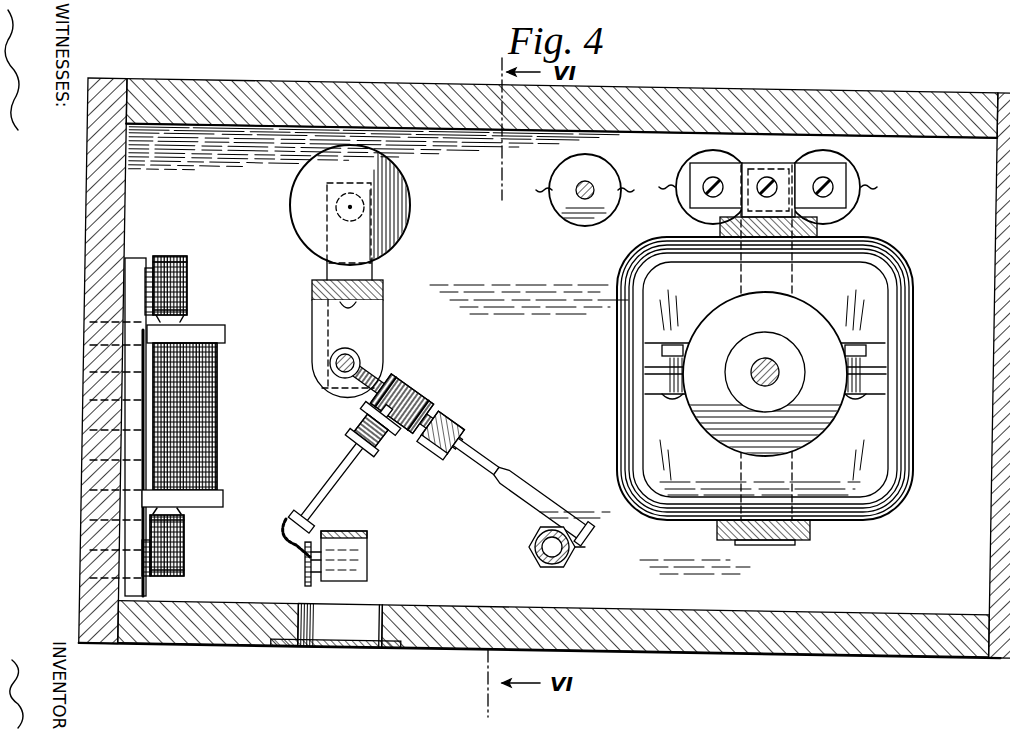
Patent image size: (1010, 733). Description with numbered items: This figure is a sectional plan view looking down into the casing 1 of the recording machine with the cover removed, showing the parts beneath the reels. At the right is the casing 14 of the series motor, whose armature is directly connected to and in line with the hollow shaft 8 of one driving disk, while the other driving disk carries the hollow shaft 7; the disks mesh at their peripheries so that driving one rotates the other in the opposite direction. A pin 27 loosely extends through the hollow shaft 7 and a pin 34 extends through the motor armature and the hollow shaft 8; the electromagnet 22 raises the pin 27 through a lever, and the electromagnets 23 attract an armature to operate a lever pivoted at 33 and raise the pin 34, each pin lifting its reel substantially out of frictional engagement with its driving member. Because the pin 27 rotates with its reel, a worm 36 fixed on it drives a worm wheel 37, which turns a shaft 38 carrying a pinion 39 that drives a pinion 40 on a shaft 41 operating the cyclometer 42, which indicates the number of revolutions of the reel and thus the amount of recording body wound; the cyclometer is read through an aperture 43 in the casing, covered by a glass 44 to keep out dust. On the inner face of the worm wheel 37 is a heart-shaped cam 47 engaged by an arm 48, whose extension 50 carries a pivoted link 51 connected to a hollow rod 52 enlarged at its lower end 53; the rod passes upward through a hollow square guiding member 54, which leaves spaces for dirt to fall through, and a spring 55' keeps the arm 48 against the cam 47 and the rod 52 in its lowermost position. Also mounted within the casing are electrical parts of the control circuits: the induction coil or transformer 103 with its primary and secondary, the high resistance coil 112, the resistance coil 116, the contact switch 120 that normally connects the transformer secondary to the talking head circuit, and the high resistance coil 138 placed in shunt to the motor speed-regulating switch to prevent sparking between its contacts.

The casing 1 is at (92, 240).
The hollow shaft 7 is at (356, 358).
The hollow shaft 8 is at (767, 360).
The motor casing 14 is at (765, 342).
The electromagnet 22 is at (291, 205).
The electromagnets 23 is at (692, 164).
The pin 27 is at (362, 368).
The pivot 33 is at (780, 543).
The pin 34 is at (772, 366).
The worm 36 is at (340, 366).
The worm wheel 37 is at (440, 430).
The shaft 38 is at (350, 478).
The pinion 39 is at (284, 521).
The pinion 40 is at (310, 566).
The shaft 41 is at (315, 577).
The cyclometer 42 is at (360, 571).
The aperture 43 is at (340, 625).
The glass 44 is at (318, 645).
The heart-shaped cam 47 is at (402, 377).
The arm 48 is at (447, 410).
The extension 50 is at (530, 482).
The link 51 is at (577, 545).
The hollow rod 52 is at (569, 562).
The enlarged end 53 is at (545, 563).
The hollow square guiding member 54 is at (616, 553).
The spring 55' is at (494, 448).
The induction coil 103 is at (218, 380).
The high resistance coil 112 is at (189, 267).
The resistance coil 116 is at (186, 561).
The contact switch 120 is at (120, 440).
The high resistance coil 138 is at (612, 200).